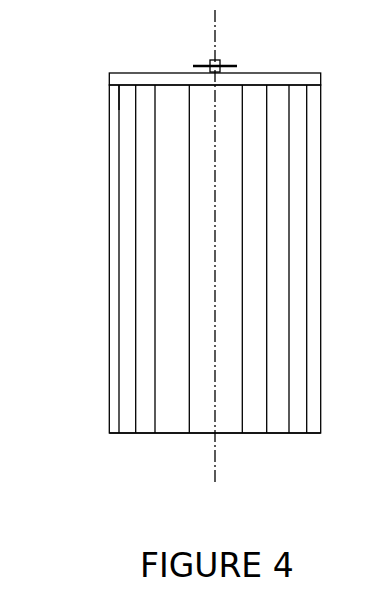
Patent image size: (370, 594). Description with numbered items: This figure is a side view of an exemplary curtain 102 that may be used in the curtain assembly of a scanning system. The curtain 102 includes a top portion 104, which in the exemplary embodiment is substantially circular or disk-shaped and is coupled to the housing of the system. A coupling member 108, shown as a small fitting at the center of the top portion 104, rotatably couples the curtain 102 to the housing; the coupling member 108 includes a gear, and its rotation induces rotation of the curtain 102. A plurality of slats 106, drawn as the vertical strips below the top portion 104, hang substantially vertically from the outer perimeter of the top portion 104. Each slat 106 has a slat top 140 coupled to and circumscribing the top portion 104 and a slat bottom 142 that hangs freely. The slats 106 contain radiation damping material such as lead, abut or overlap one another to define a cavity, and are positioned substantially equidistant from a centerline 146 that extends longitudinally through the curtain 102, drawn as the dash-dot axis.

The curtain 102 is at (109, 202).
The top portion 104 is at (275, 72).
The slat 106 is at (117, 149).
The coupling member 108 is at (205, 65).
The slat top 140 is at (117, 95).
The slat bottom 142 is at (110, 432).
The centerline 146 is at (216, 471).